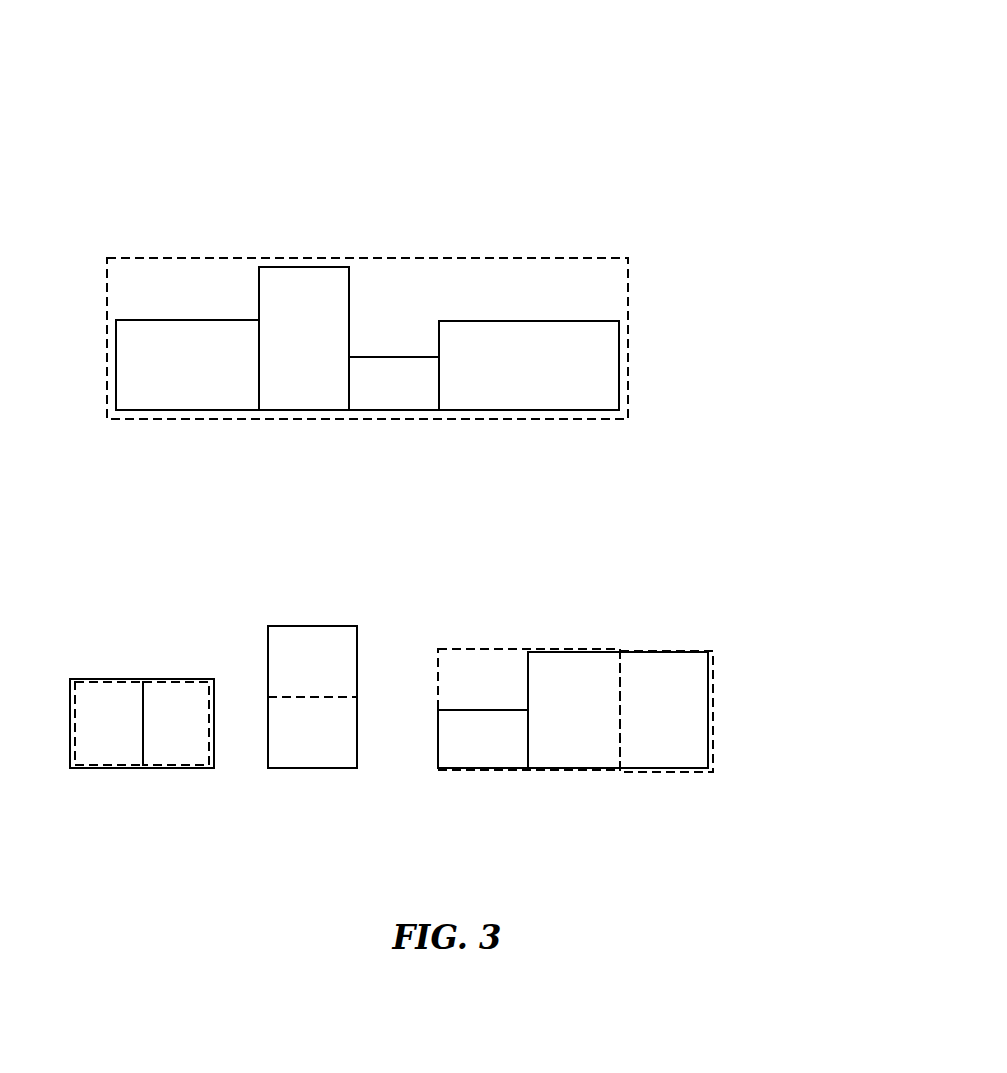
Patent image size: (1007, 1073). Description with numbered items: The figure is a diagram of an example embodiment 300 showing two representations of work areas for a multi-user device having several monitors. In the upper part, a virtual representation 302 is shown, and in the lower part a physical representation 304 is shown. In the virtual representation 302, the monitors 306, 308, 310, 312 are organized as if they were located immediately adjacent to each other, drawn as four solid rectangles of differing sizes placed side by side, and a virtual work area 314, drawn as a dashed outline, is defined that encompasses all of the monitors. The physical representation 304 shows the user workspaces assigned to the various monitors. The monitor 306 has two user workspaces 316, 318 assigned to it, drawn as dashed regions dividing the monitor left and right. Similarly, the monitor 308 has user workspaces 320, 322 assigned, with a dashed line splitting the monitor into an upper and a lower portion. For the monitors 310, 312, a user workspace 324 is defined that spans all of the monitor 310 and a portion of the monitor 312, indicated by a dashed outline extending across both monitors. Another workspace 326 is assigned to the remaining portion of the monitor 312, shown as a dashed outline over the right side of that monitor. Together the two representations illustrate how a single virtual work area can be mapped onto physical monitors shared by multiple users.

The example embodiment 300 is at (207, 148).
The virtual representation 302 is at (690, 220).
The physical representation 304 is at (690, 581).
The monitor 306 is at (127, 679).
The monitor 308 is at (333, 626).
The monitor 310 is at (487, 710).
The monitor 312 is at (577, 652).
The virtual work area 314 is at (628, 339).
The user workspace 316 is at (103, 750).
The user workspace 318 is at (178, 743).
The user workspace 320 is at (300, 643).
The user workspace 322 is at (318, 750).
The user workspace 324 is at (438, 669).
The workspace 326 is at (663, 723).